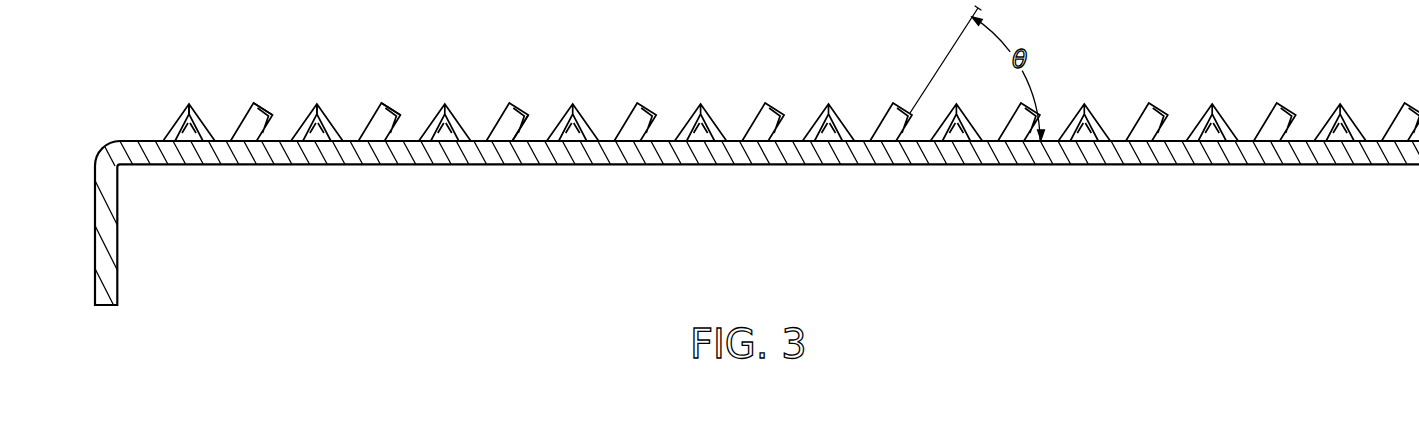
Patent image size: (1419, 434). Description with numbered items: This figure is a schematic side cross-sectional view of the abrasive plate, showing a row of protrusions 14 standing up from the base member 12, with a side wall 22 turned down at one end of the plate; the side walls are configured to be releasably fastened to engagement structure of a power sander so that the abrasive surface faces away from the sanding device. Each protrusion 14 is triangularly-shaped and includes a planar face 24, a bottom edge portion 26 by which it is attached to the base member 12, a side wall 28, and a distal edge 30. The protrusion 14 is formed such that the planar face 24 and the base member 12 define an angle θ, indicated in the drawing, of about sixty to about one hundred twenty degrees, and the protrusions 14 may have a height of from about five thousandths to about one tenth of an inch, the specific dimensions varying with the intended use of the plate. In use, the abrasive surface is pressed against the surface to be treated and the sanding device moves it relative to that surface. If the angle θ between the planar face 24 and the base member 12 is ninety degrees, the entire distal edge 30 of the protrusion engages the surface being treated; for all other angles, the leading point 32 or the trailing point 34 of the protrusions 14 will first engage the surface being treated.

The base member 12 is at (525, 152).
The protrusion 14 is at (1160, 99).
The side wall 22 is at (105, 291).
The planar face 24 is at (190, 136).
The bottom edge portion 26 is at (358, 141).
The side wall 28 is at (248, 136).
The distal edge 30 is at (382, 100).
The leading point 32 is at (190, 105).
The trailing point 34 is at (530, 120).